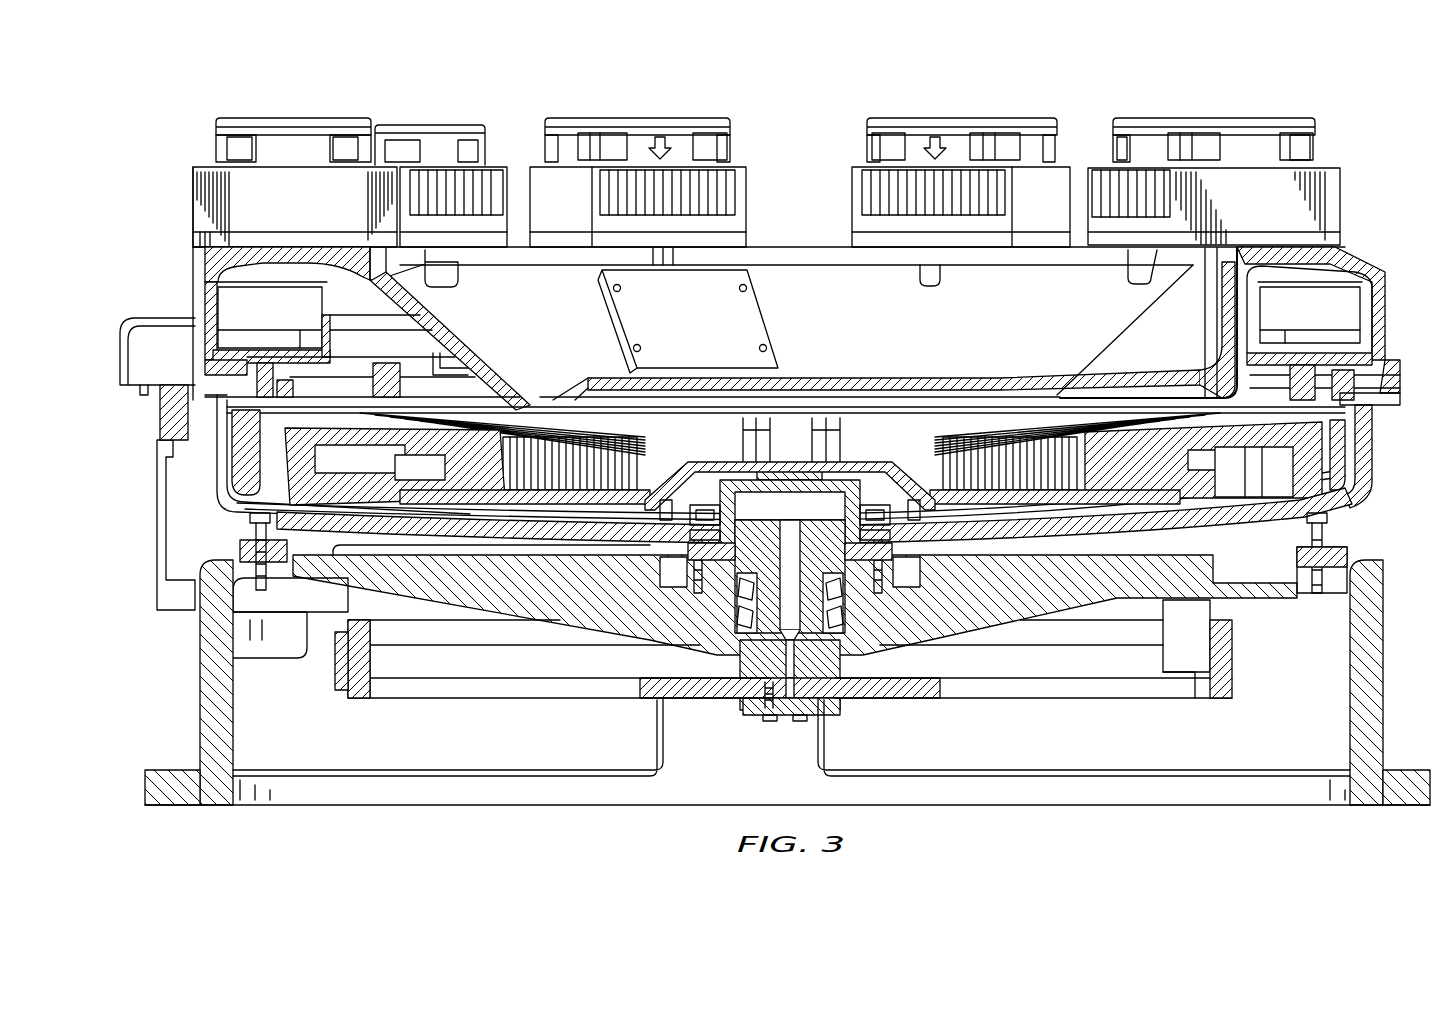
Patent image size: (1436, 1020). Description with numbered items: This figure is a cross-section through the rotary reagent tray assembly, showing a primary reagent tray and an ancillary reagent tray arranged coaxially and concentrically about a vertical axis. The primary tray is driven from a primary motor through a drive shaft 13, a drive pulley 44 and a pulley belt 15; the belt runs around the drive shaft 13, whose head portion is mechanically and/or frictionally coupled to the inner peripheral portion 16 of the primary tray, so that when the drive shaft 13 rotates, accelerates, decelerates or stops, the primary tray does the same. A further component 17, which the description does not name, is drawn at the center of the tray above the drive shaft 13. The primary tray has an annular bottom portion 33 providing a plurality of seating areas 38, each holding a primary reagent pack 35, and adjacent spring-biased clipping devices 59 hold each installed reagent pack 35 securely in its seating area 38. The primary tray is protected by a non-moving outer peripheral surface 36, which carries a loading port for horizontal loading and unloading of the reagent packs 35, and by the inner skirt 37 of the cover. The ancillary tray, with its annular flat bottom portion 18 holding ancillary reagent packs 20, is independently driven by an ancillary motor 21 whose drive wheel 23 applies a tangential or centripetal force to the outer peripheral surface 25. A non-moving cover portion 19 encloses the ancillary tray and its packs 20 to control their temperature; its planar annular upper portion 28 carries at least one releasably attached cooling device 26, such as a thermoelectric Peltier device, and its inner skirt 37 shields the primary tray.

The drive shaft 13 is at (800, 690).
The pulley belt 15 is at (1090, 638).
The inner peripheral portion 16 is at (683, 543).
The shaft / hub cap 17 is at (790, 500).
The bottom portion 18 is at (1350, 352).
The cover portion 19 is at (212, 288).
The ancillary reagent packs 20 is at (280, 300).
The ancillary motor 21 is at (160, 523).
The drive wheel 23 is at (120, 332).
The outer peripheral surface 25 is at (1385, 305).
The cooling device 26 is at (1248, 118).
The upper portion 28 is at (313, 245).
The annular bottom portion 33 is at (480, 525).
The primary reagent packs 35 is at (1105, 445).
The outer peripheral surface 36 is at (1373, 425).
The inner skirt 37 is at (502, 340).
The seating areas 38 is at (1357, 497).
The drive pulley 44 is at (590, 665).
The spring-biased clipping devices 59 is at (295, 460).